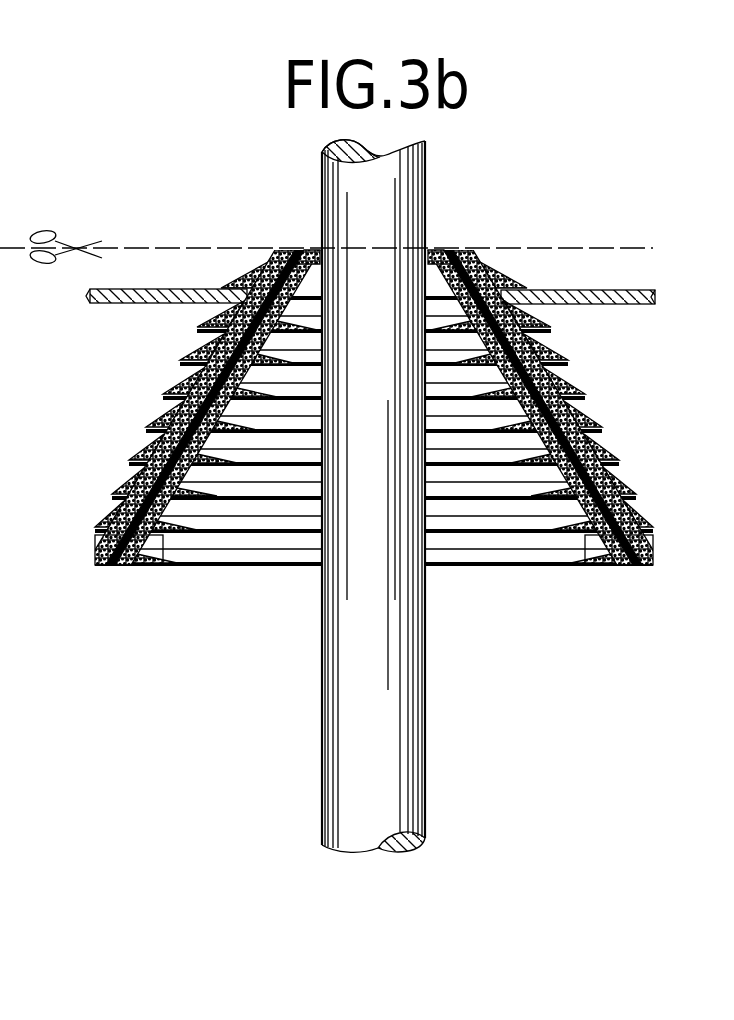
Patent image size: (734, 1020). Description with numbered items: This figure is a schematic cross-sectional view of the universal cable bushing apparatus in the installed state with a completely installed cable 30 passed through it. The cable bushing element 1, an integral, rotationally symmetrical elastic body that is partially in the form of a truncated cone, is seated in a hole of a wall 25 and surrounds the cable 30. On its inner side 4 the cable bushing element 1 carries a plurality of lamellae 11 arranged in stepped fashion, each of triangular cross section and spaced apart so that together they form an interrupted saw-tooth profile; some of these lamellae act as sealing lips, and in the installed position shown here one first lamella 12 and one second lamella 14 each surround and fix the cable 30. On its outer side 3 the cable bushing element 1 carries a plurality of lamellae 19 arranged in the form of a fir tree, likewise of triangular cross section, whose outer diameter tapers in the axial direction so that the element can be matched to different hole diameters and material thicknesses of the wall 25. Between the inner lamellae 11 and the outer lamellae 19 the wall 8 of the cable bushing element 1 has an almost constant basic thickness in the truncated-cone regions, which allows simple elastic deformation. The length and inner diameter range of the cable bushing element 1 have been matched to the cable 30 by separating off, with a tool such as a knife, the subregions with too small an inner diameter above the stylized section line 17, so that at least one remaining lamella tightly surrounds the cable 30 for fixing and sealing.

The cable bushing element 1 is at (150, 597).
The outer side 3 is at (652, 489).
The inner side 4 is at (491, 512).
The wall 8 is at (170, 405).
The lamellae 11 is at (543, 497).
The first lamella 12 is at (308, 256).
The second lamella 14 is at (430, 292).
The section line 17 is at (188, 246).
The lamellae 19 is at (190, 358).
The wall 25 is at (546, 292).
The cable 30 is at (345, 661).